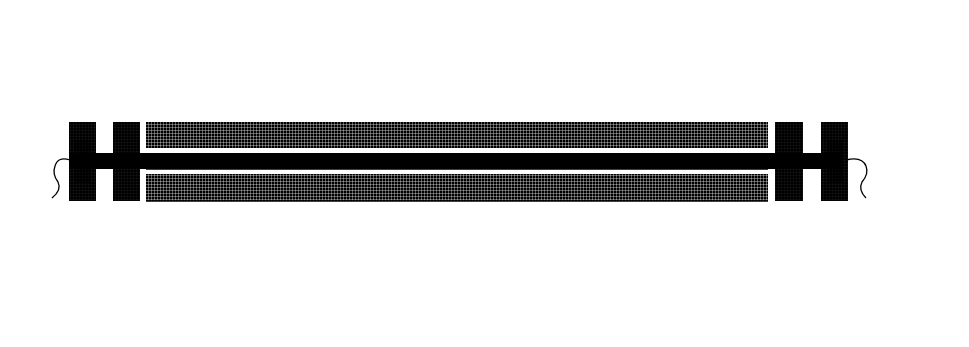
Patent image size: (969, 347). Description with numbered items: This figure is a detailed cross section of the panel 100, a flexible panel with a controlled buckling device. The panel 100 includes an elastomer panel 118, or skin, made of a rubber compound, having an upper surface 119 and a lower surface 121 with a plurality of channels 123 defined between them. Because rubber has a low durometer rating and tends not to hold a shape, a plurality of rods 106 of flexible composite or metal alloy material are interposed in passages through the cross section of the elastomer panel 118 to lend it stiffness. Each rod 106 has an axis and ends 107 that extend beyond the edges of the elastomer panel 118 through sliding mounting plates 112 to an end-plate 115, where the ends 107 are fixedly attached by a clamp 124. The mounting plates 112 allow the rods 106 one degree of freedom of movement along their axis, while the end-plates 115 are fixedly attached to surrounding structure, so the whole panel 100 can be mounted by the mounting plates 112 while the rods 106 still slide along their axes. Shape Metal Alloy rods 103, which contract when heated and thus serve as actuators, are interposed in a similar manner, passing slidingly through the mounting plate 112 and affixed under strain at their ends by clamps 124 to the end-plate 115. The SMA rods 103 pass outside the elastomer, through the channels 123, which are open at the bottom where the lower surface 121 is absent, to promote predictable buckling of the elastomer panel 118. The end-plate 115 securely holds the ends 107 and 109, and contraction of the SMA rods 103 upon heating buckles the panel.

The panel 100 is at (655, 47).
The SMA rod 103 is at (455, 114).
The rod 106 is at (410, 143).
The end 107 is at (456, 242).
The end 109 is at (99, 197).
The mounting plate 112 is at (118, 128).
The end-plate 115 is at (73, 195).
The elastomer panel 118 is at (504, 179).
The upper surface 119 is at (488, 113).
The lower surface 121 is at (452, 194).
The channel 123 is at (249, 160).
The clamp 124 is at (73, 137).